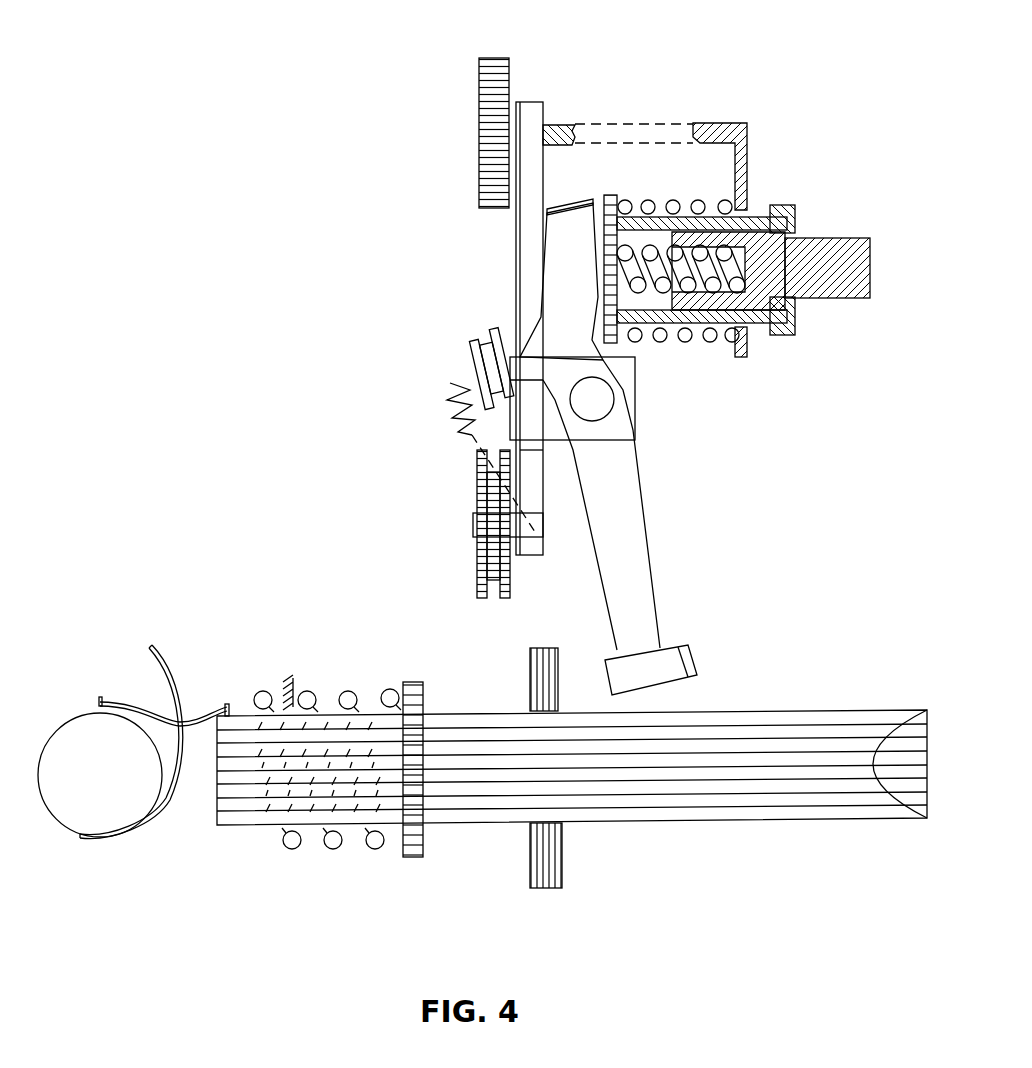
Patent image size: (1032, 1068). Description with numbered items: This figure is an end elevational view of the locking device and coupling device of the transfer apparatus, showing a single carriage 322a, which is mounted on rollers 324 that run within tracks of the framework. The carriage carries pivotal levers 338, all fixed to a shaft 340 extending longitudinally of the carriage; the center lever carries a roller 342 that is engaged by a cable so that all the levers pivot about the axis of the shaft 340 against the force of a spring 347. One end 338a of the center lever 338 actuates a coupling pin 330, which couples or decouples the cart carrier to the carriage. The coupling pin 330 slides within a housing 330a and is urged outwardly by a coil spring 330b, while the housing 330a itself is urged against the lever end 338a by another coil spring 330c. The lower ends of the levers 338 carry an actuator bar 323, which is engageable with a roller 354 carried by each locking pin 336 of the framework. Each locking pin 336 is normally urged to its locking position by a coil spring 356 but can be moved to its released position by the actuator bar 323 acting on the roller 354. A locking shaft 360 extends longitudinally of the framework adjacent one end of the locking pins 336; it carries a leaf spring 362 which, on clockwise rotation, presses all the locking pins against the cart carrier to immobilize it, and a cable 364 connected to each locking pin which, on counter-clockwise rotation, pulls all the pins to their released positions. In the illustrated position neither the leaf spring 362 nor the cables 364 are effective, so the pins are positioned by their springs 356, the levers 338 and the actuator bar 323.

The carriage 322a is at (450, 172).
The rollers 324 is at (478, 75).
The end of center lever 338a is at (567, 227).
The coil spring 330c is at (675, 200).
The coupling pin 330 is at (827, 300).
The housing 330a is at (765, 335).
The coil spring 330b is at (698, 323).
The shaft 340 is at (612, 400).
The roller 342 is at (463, 353).
The spring 347 is at (447, 384).
The pivotal lever 338 is at (630, 536).
The actuator bar 323 is at (700, 657).
The roller 354 is at (530, 673).
The locking pin 336 is at (800, 710).
The coil spring 356 is at (298, 697).
The cable 364 is at (203, 707).
The leaf spring 362 is at (163, 643).
The locking shaft 360 is at (125, 785).